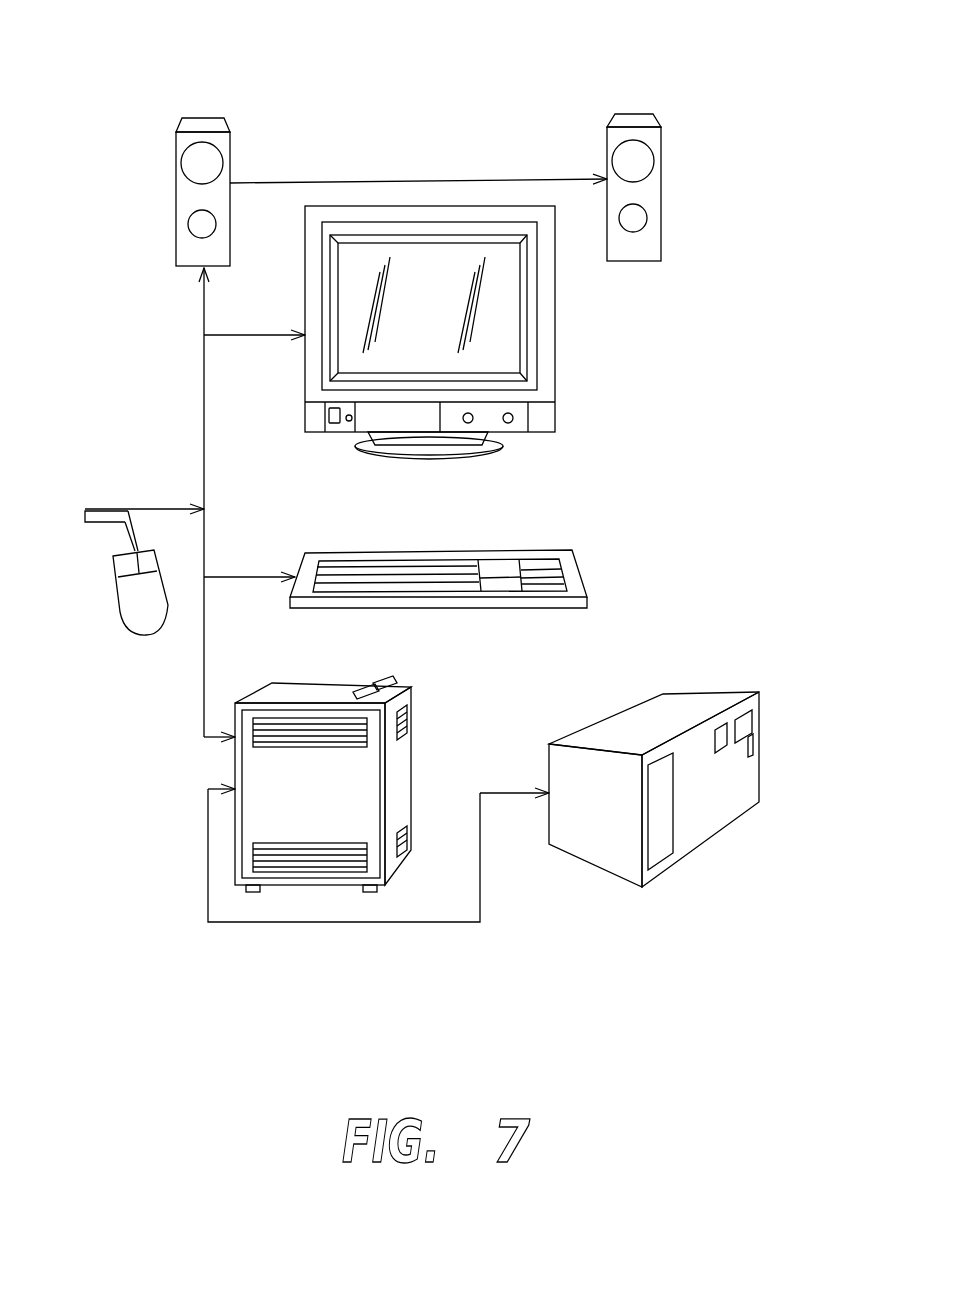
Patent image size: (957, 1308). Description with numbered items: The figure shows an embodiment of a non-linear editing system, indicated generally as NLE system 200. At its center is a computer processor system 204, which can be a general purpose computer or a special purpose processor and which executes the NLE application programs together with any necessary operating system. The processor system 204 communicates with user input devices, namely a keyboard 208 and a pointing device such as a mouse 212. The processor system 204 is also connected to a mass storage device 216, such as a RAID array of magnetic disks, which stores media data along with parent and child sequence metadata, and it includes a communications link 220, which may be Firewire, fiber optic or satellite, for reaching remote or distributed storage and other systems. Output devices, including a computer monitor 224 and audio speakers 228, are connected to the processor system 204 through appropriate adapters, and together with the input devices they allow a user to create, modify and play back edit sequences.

The NLE system 200 is at (252, 77).
The computer processor system 204 is at (392, 680).
The keyboard 208 is at (588, 550).
The mouse 212 is at (120, 620).
The mass storage device 216 is at (723, 692).
The communications link 220 is at (207, 812).
The computer monitor 224 is at (555, 397).
The audio speakers 228 is at (183, 268).